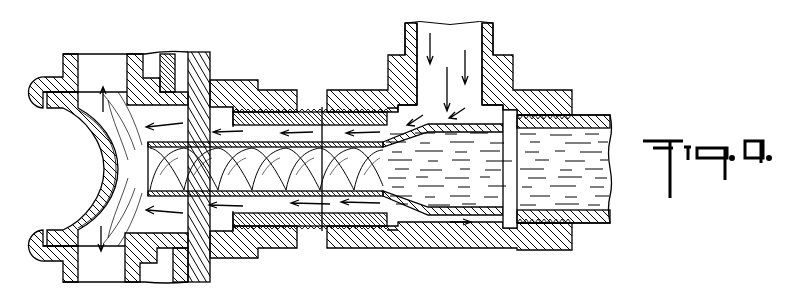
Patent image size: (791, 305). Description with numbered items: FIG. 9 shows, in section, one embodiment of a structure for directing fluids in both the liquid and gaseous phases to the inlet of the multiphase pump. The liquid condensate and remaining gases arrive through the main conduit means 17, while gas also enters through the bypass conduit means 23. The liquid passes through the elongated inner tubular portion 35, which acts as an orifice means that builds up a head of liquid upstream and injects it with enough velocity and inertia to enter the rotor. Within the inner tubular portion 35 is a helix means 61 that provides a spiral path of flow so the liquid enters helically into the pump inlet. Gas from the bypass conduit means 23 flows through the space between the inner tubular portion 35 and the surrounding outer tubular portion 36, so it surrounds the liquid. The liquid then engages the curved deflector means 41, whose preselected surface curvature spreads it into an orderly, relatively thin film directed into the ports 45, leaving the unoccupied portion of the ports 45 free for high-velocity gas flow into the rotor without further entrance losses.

The main conduit means 17 is at (600, 116).
The bypass conduit means 23 is at (492, 47).
The inner tubular portion 35 is at (322, 135).
The outer tubular portion 36 is at (312, 193).
The deflector means 41 is at (100, 152).
The ports 45 is at (88, 120).
The helix means 61 is at (323, 174).